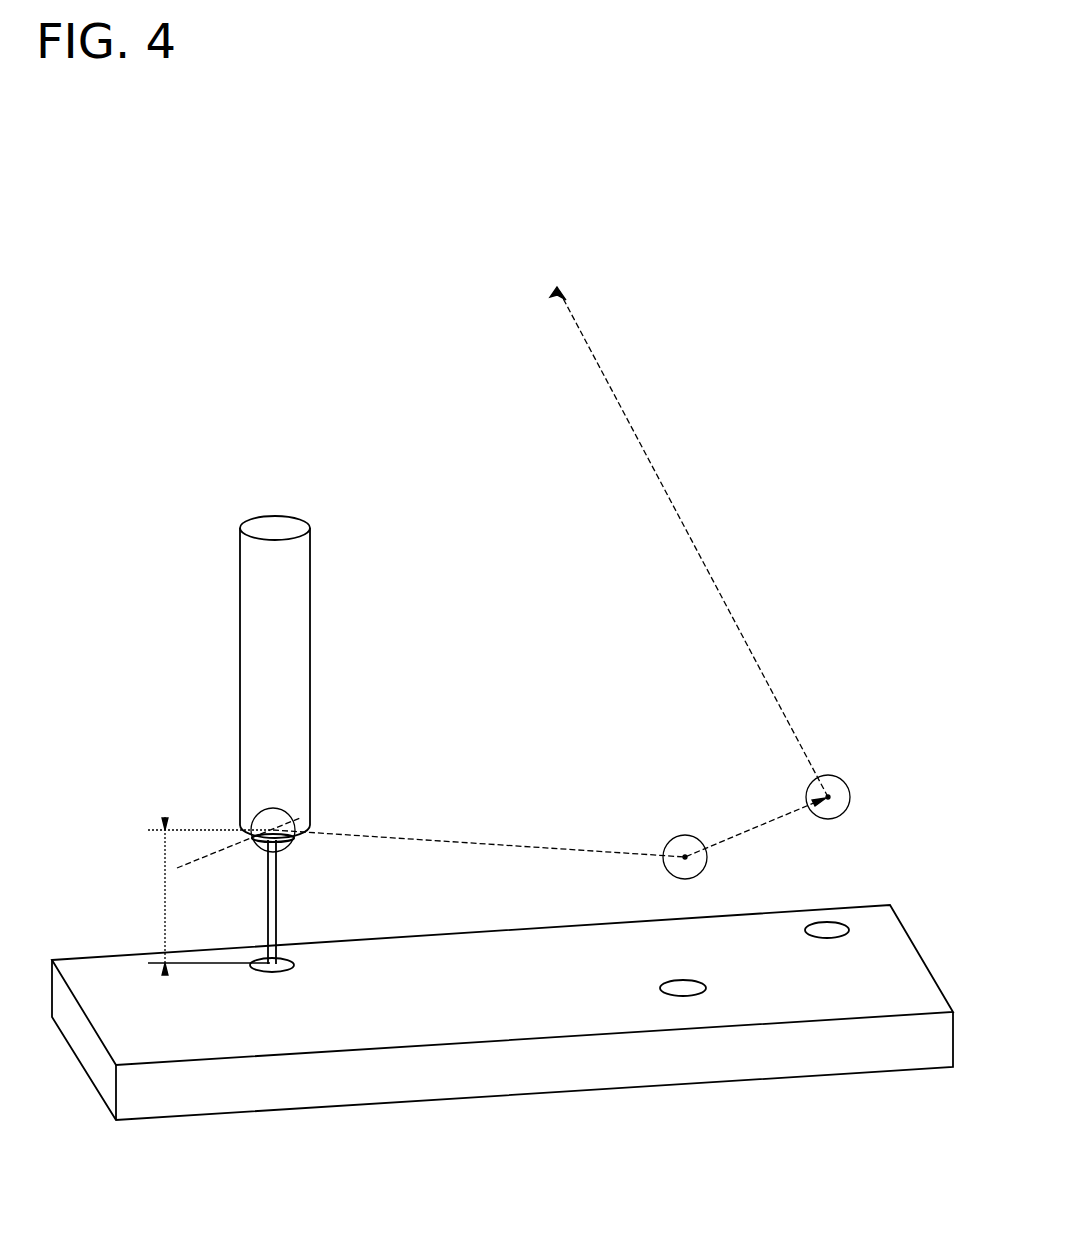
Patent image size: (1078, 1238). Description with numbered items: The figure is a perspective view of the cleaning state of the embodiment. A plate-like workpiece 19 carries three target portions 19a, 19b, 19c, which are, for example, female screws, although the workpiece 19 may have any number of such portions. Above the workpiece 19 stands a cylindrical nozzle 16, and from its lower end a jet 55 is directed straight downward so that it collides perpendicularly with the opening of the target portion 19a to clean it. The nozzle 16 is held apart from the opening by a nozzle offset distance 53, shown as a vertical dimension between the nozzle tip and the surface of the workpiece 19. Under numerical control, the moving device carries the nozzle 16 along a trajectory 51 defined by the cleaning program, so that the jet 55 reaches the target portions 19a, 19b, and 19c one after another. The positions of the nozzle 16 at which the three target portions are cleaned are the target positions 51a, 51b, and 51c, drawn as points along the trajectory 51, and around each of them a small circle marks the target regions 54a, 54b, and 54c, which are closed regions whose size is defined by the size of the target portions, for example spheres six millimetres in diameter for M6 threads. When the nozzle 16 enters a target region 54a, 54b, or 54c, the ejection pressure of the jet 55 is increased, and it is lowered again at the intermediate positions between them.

The nozzle 16 is at (310, 669).
The workpiece 19 is at (445, 1100).
The target portion 19a is at (288, 972).
The target portion 19b is at (697, 979).
The target portion 19c is at (835, 939).
The trajectory 51 is at (489, 840).
The target position 51a is at (285, 822).
The target position 51b is at (686, 838).
The target position 51c is at (850, 797).
The nozzle offset distance 53 is at (203, 896).
The target region 54a is at (273, 808).
The target region 54b is at (665, 872).
The target region 54c is at (822, 819).
The jet 55 is at (278, 886).